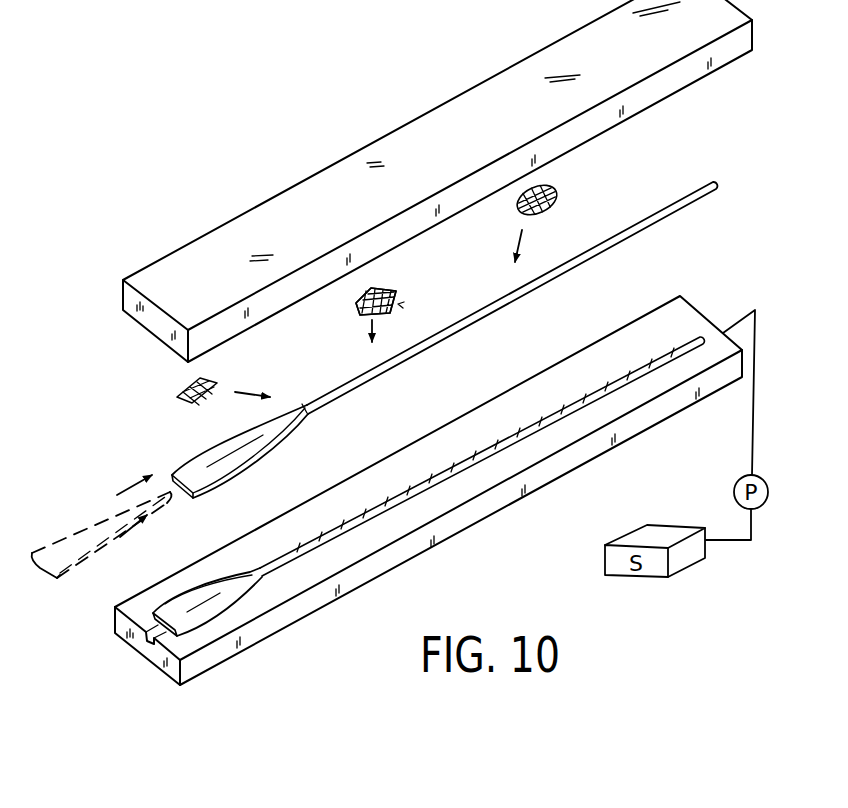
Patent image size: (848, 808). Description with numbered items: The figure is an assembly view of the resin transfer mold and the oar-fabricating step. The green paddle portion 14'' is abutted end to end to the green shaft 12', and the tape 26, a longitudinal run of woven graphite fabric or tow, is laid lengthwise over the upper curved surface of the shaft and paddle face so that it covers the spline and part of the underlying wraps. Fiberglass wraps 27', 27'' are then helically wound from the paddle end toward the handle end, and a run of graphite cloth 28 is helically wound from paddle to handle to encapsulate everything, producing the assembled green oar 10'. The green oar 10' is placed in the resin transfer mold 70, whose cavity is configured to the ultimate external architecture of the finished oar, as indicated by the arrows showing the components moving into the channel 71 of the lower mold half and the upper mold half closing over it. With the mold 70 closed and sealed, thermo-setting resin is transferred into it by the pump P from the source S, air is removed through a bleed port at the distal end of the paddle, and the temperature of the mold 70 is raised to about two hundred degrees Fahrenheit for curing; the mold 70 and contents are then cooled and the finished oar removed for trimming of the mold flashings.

The green oar 10' is at (444, 362).
The green shaft 12' is at (512, 298).
The green paddle portion 14'' is at (240, 473).
The woven graphite fabric tape 26 is at (182, 386).
The fifth wrap of uni-directional fiberglass cloth 27' is at (419, 284).
The sixth layer of fiberglass cloth 27'' is at (380, 315).
The seventh layer of graphite cloth 28 is at (561, 195).
The resin transfer mold 70 is at (309, 608).
The channel / groove 71 is at (148, 638).